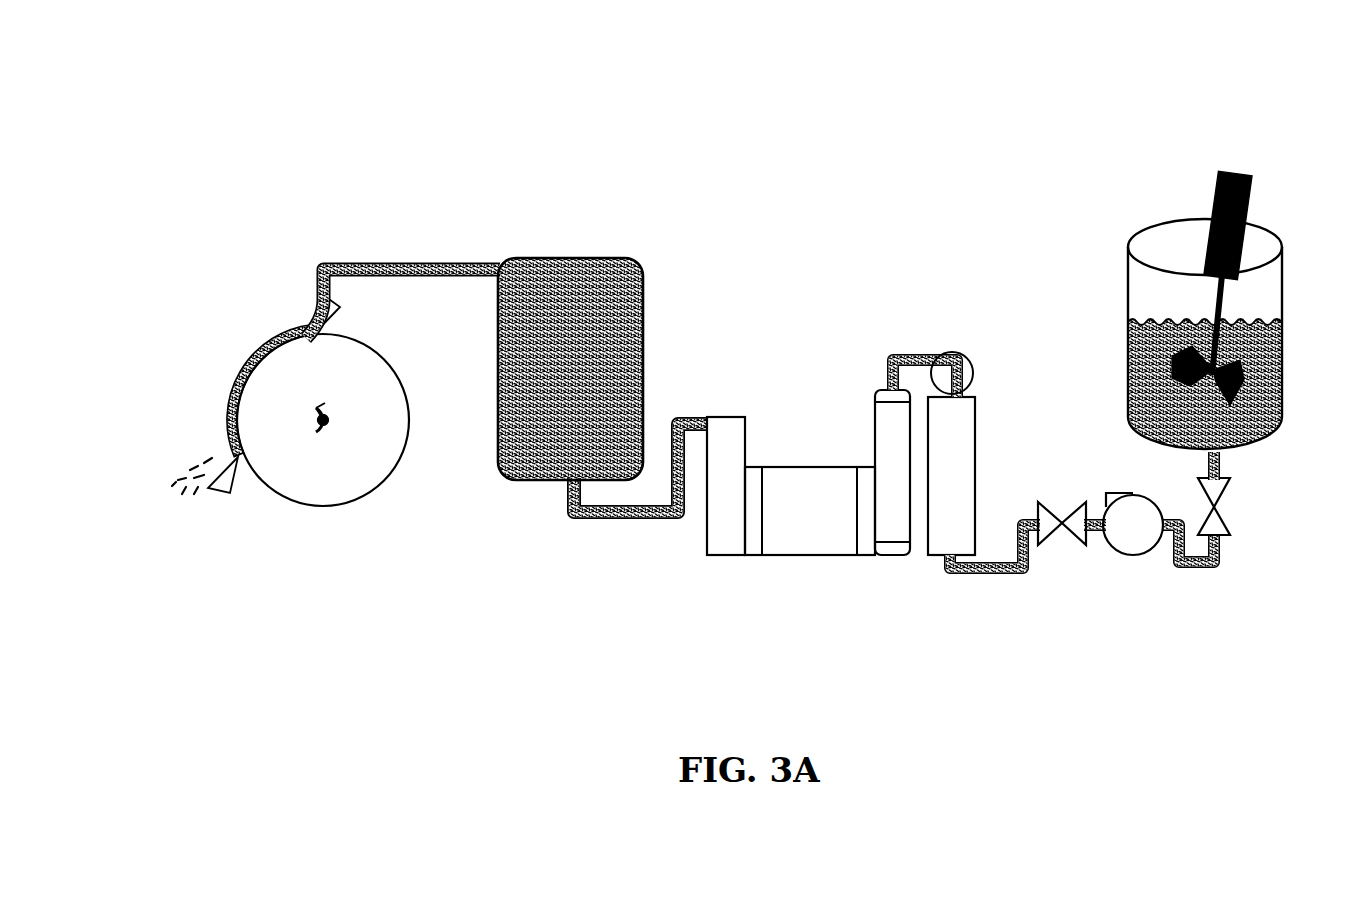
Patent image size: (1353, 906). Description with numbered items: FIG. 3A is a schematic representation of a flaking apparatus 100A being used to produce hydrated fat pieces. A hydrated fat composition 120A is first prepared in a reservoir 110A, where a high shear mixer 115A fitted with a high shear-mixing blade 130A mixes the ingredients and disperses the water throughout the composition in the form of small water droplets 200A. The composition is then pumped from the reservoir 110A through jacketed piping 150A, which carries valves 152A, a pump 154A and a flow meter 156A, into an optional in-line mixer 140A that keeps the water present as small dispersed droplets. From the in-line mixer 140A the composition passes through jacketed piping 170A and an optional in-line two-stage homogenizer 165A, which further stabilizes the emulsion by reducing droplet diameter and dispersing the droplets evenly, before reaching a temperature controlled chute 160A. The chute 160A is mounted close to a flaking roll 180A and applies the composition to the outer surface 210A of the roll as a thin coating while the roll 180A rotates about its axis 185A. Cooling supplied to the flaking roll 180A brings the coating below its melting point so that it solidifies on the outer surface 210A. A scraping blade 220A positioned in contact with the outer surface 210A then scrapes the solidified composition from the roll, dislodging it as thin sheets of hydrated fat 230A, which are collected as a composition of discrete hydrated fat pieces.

The flaking apparatus 100A is at (672, 91).
The hydrated fat reservoir 110A is at (1112, 272).
The high shear mixer 115A is at (1243, 185).
The hydrated fat composition 120A is at (1284, 390).
The high shear-mixing blade 130A is at (1263, 322).
The in-line mixer 140A is at (815, 556).
The jacketed piping 150A is at (906, 358).
The valves 152A is at (1052, 513).
The pump 154A is at (1125, 558).
The flow meter 156A is at (978, 421).
The temperature controlled chute 160A is at (343, 311).
The in-line two-stage homogenizer 165A is at (646, 300).
The jacketed piping 170A is at (409, 262).
The flaking roll 180A is at (362, 509).
The axis 185A is at (312, 421).
The water droplets 200A is at (1211, 466).
The outer surface 210A is at (247, 371).
The scraping blade 220A is at (234, 482).
The thin sheets of hydrated fat 230A is at (198, 462).